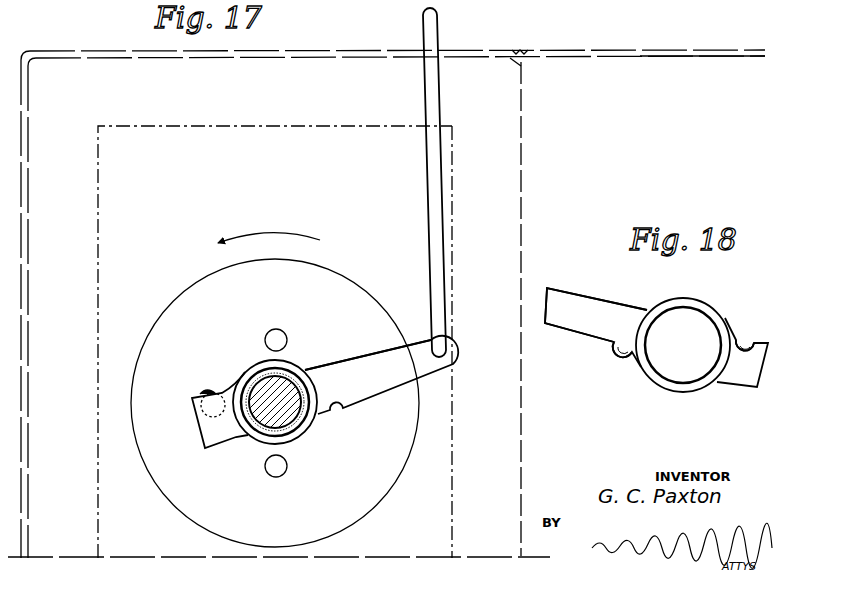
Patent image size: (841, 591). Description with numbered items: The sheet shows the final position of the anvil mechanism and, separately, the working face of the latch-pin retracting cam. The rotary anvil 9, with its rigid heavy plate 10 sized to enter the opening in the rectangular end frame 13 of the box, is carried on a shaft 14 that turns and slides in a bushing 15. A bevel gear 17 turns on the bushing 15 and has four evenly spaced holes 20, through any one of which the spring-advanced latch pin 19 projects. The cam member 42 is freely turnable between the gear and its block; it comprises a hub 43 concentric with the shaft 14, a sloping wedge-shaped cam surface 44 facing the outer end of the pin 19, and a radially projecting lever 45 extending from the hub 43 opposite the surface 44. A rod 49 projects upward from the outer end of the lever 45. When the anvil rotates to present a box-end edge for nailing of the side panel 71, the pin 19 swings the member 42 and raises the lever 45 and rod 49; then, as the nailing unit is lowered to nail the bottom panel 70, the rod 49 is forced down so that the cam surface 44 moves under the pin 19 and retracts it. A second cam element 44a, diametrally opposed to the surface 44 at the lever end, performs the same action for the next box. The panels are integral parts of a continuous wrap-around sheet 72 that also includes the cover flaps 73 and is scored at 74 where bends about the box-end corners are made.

In FIG. 17, the rotary anvil 9 is at (250, 121).
In FIG. 17, the rigid heavy plate 10 is at (456, 219).
In FIG. 17, the rectangular end frame 13 is at (524, 162).
In FIG. 17, the shaft 14 is at (283, 388).
In FIG. 17, the bushing 15 is at (258, 382).
In FIG. 17, the bevel gear 17 is at (346, 278).
In FIG. 17, the latch pin 19 is at (208, 392).
In FIG. 17, the holes 20 is at (289, 466).
In FIG. 17, the cam member 42 is at (318, 441).
In FIG. 18, the cam member 42 is at (650, 392).
In FIG. 17, the hub 43 is at (255, 445).
In FIG. 18, the hub 43 is at (703, 308).
In FIG. 18, the cam surface 44 is at (746, 338).
In FIG. 18, the cam element 44a is at (621, 354).
In FIG. 17, the lever 45 is at (366, 360).
In FIG. 18, the lever 45 is at (573, 302).
In FIG. 17, the rod 49 is at (430, 163).
In FIG. 17, the bottom panel 70 is at (28, 246).
In FIG. 17, the side panel 71 is at (291, 52).
In FIG. 17, the wrap-around sheet 72 is at (581, 45).
In FIG. 17, the cover flaps 73 is at (619, 51).
In FIG. 17, the score line 74 is at (522, 48).